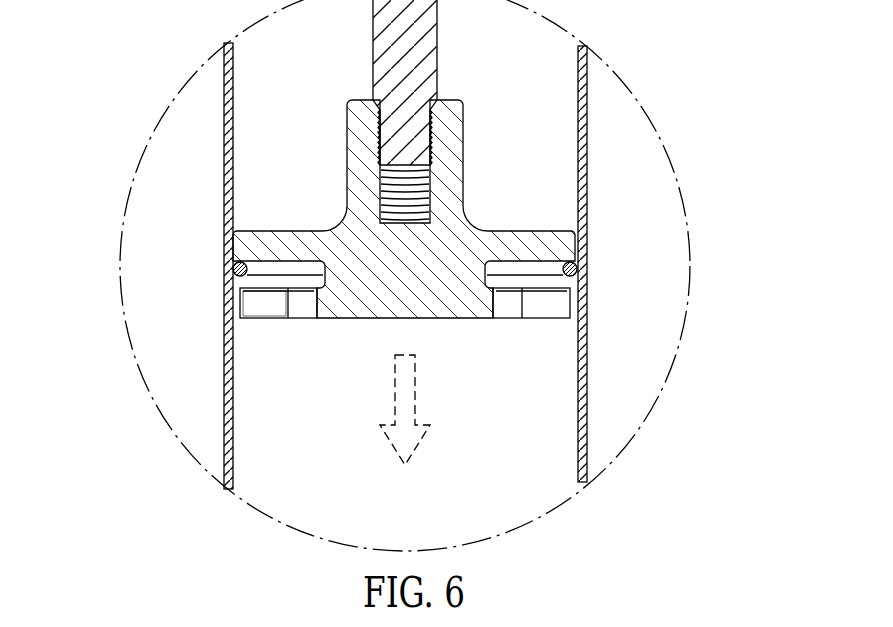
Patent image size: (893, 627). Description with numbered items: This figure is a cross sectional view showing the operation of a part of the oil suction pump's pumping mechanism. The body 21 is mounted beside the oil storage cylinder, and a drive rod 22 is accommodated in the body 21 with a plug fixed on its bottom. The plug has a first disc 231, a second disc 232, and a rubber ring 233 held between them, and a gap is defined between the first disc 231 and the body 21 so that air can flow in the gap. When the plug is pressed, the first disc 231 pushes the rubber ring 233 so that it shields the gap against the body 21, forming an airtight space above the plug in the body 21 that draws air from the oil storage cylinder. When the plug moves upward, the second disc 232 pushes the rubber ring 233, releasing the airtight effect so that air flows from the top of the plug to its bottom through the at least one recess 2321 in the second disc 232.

The body 21 is at (588, 195).
The drive rod 22 is at (437, 62).
The first disc 231 is at (263, 231).
The second disc 232 is at (240, 312).
The rubber ring 233 is at (237, 273).
The recess 2321 is at (270, 305).